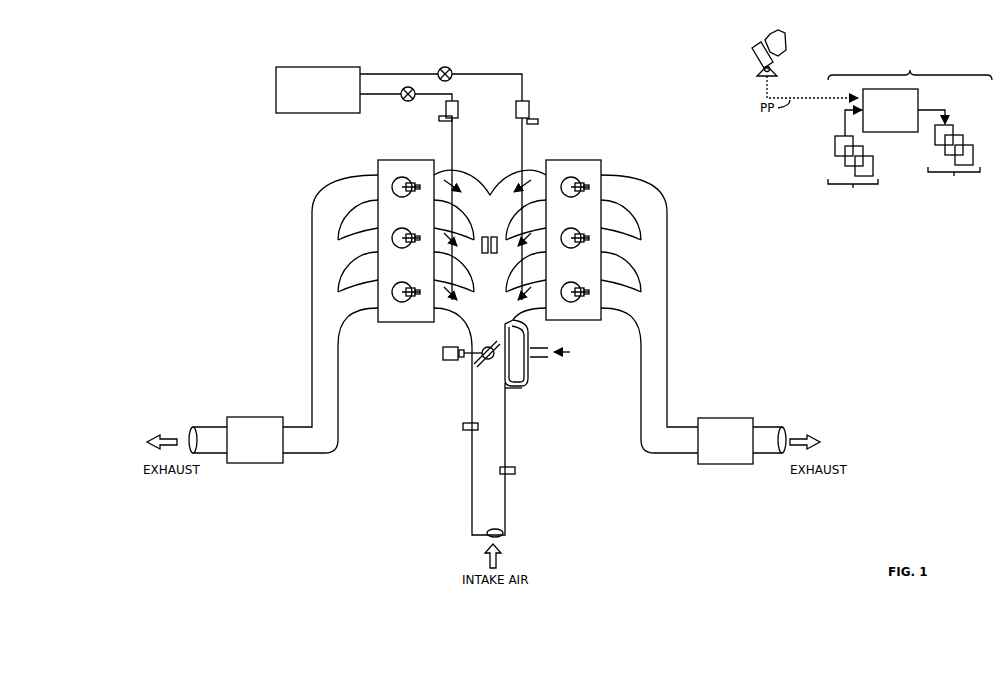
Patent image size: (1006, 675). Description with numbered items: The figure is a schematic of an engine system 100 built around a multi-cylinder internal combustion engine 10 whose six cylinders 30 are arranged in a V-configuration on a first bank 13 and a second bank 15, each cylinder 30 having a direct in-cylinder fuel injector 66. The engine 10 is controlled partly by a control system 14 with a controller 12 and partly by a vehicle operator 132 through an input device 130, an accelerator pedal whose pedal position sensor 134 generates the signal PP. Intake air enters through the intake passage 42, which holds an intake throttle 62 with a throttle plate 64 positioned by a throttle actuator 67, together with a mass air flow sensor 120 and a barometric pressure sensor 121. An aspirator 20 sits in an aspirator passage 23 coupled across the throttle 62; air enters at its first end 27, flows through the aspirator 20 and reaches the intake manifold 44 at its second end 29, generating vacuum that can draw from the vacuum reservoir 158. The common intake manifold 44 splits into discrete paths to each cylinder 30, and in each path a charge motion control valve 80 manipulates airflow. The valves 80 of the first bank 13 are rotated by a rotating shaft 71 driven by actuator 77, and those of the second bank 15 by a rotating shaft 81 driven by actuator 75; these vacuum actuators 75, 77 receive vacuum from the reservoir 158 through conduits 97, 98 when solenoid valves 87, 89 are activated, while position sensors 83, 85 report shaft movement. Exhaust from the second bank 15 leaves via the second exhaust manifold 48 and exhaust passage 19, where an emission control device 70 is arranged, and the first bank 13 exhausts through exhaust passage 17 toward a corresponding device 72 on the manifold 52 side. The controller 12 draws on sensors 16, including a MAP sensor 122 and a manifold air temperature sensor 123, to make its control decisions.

The engine system 100 is at (198, 62).
The vacuum reservoir 158 is at (318, 90).
The conduit 98 is at (398, 73).
The conduit 97 is at (375, 99).
The valve 89 is at (448, 68).
The valve 87 is at (402, 92).
The CMCV actuator 75 is at (457, 101).
The CMCV actuator 77 is at (514, 117).
The position sensor 83 is at (443, 120).
The position sensor 85 is at (533, 118).
The rotating shaft 81 is at (453, 143).
The rotating shaft 71 is at (521, 146).
The internal combustion engine 10 is at (580, 130).
The second bank 15 is at (386, 159).
The first bank 13 is at (596, 160).
The cylinder 30 is at (573, 228).
The fuel injector 66 is at (585, 236).
The second exhaust manifold 48 is at (330, 314).
The second exhaust manifold 52 is at (649, 314).
The exhaust passage 19 is at (312, 362).
The exhaust passage 17 is at (667, 368).
The intake manifold 44 is at (490, 245).
The charge motion control valve 80 is at (456, 188).
The MAP sensor 122 is at (485, 253).
The manifold air temperature sensor 123 is at (497, 247).
The intake passage 42 is at (472, 478).
The throttle plate 64 is at (492, 346).
The intake throttle 62 is at (491, 368).
The throttle actuator 67 is at (446, 347).
The aspirator 20 is at (531, 360).
The second end 29 is at (524, 319).
The aspirator passage 23 is at (522, 389).
The first end 27 is at (509, 394).
The mass air flow sensor 120 is at (463, 430).
The barometric pressure sensor 121 is at (515, 470).
The emission control device 70 is at (236, 440).
The second emission control device 72 is at (742, 441).
The input device 130 is at (754, 52).
The vehicle operator 132 is at (785, 46).
The pedal position sensor 134 is at (773, 70).
The control system 14 is at (910, 60).
The controller 12 is at (890, 110).
The sensors 16 is at (854, 163).